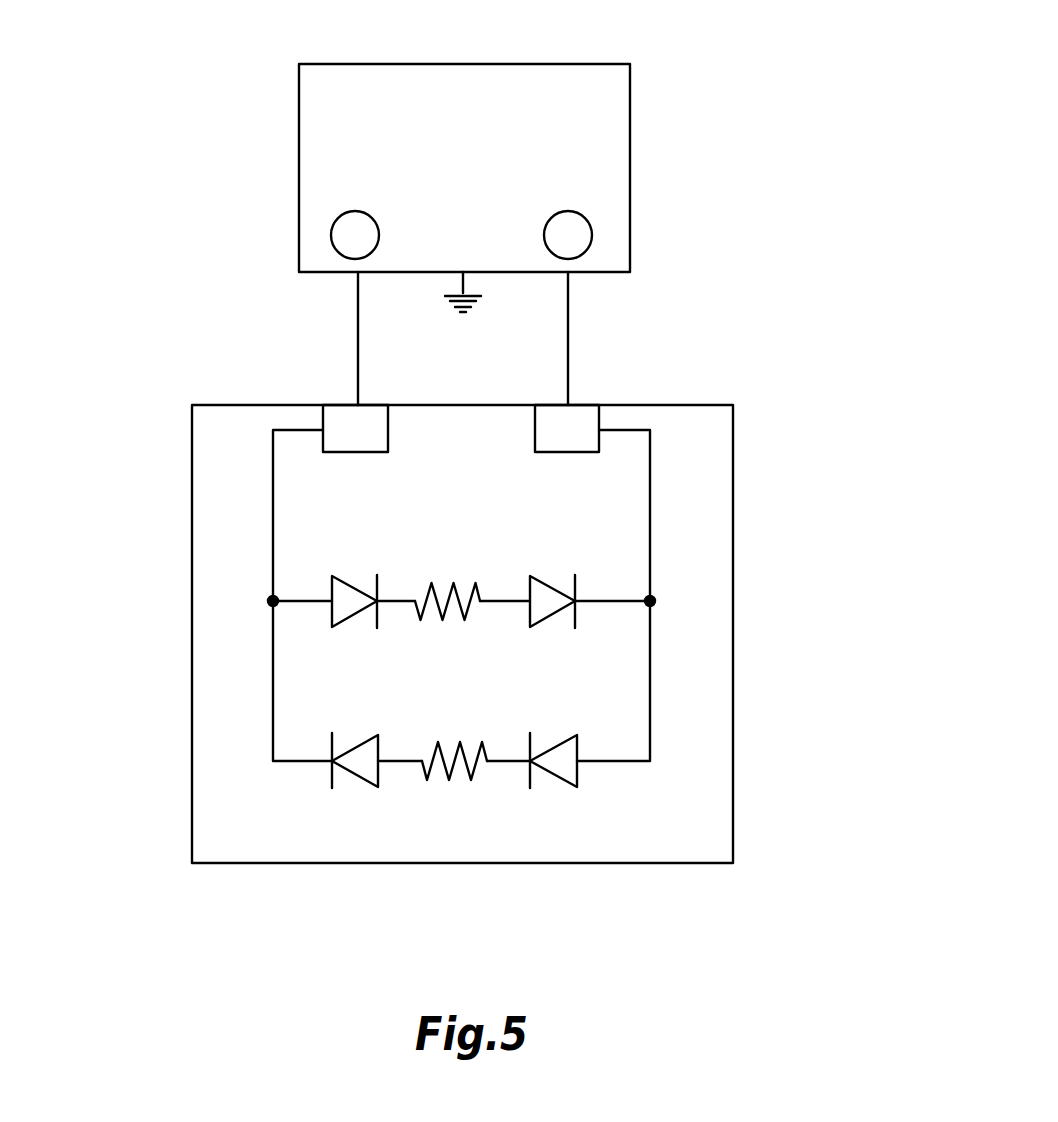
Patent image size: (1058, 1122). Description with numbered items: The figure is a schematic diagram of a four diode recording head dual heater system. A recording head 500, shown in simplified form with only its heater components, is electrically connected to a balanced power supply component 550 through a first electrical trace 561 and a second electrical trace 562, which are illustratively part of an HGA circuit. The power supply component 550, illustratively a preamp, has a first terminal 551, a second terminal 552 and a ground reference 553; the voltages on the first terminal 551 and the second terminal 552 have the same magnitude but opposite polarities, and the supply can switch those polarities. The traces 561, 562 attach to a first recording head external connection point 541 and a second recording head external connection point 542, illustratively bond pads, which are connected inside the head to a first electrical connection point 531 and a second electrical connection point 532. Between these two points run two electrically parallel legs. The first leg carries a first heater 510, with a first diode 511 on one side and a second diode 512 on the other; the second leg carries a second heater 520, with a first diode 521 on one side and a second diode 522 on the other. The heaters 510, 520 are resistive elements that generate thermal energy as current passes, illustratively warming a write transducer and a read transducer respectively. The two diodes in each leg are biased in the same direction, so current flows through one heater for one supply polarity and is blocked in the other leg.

The recording head 500 is at (718, 462).
The first heater 510 is at (448, 590).
The first diode 511 is at (330, 587).
The second diode 512 is at (543, 580).
The second heater 520 is at (450, 770).
The first diode 521 is at (572, 748).
The second diode 522 is at (370, 738).
The first electrical connection point 531 is at (273, 601).
The second electrical connection point 532 is at (650, 601).
The first recording head external connection point 541 is at (345, 414).
The second recording head external connection point 542 is at (580, 427).
The balanced power supply component 550 is at (603, 72).
The first terminal 551 is at (342, 232).
The second terminal 552 is at (585, 240).
The ground reference 553 is at (468, 287).
The first electrical trace 561 is at (355, 340).
The second electrical trace 562 is at (568, 358).